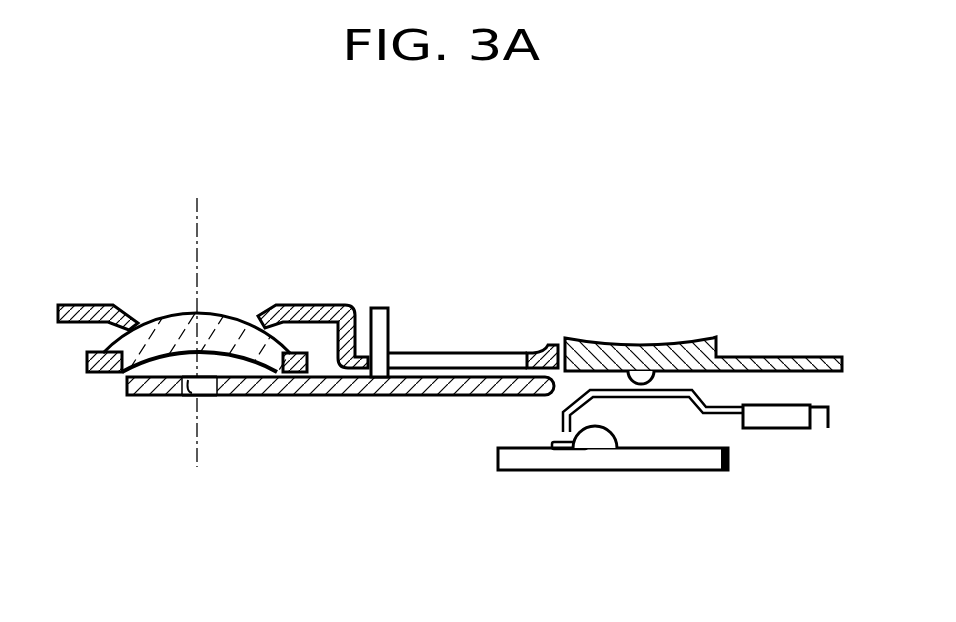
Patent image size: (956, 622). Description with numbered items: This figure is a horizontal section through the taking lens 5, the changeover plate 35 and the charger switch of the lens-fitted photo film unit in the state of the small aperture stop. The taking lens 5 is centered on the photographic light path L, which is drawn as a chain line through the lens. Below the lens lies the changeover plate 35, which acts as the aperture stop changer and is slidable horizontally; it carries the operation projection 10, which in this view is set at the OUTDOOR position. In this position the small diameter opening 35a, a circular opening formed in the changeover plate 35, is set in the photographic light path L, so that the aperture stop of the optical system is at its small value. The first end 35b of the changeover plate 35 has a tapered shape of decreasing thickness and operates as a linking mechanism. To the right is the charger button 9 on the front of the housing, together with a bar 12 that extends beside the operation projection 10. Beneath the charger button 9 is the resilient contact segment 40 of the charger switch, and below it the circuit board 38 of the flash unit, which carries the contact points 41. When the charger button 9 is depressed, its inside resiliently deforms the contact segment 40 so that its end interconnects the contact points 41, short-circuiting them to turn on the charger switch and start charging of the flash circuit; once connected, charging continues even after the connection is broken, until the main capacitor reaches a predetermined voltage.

The photographic light path L is at (197, 242).
The taking lens 5 is at (230, 316).
The charger button 9 is at (638, 348).
The operation projection 10 is at (380, 305).
The lever 12 is at (453, 357).
The changeover plate 35 is at (297, 420).
The small diameter opening 35a is at (187, 386).
The first end 35b is at (548, 400).
The circuit board 38 is at (530, 470).
The contact segment 40 is at (646, 399).
The contact points 41 is at (596, 441).